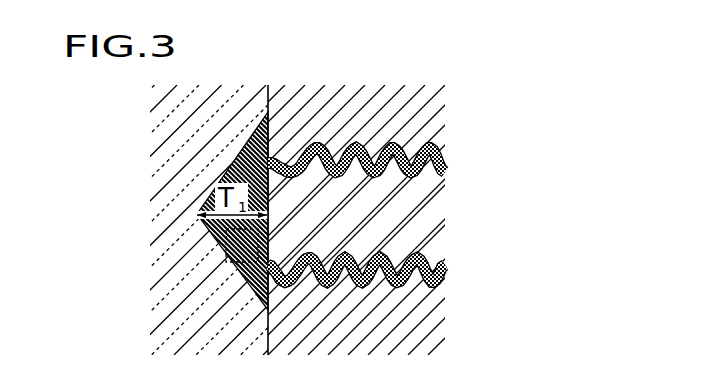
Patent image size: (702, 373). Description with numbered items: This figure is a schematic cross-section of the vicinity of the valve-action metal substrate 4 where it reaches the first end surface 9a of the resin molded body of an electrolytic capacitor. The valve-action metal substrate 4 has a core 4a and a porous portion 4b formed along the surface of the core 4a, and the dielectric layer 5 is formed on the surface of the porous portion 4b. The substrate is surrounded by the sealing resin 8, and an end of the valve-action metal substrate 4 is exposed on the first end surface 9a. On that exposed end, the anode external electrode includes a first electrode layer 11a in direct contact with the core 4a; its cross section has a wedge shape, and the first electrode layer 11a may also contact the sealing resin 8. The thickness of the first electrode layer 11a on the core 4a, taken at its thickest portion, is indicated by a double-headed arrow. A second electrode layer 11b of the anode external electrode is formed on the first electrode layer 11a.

The valve-action metal substrate 4 is at (365, 220).
The core 4a is at (433, 215).
The porous portion 4b is at (393, 159).
The dielectric layer 5 is at (433, 292).
The sealing resin 8 is at (433, 117).
The first end surface 9a is at (263, 327).
The first electrode layer 11a is at (236, 265).
The second electrode layer 11b is at (158, 150).